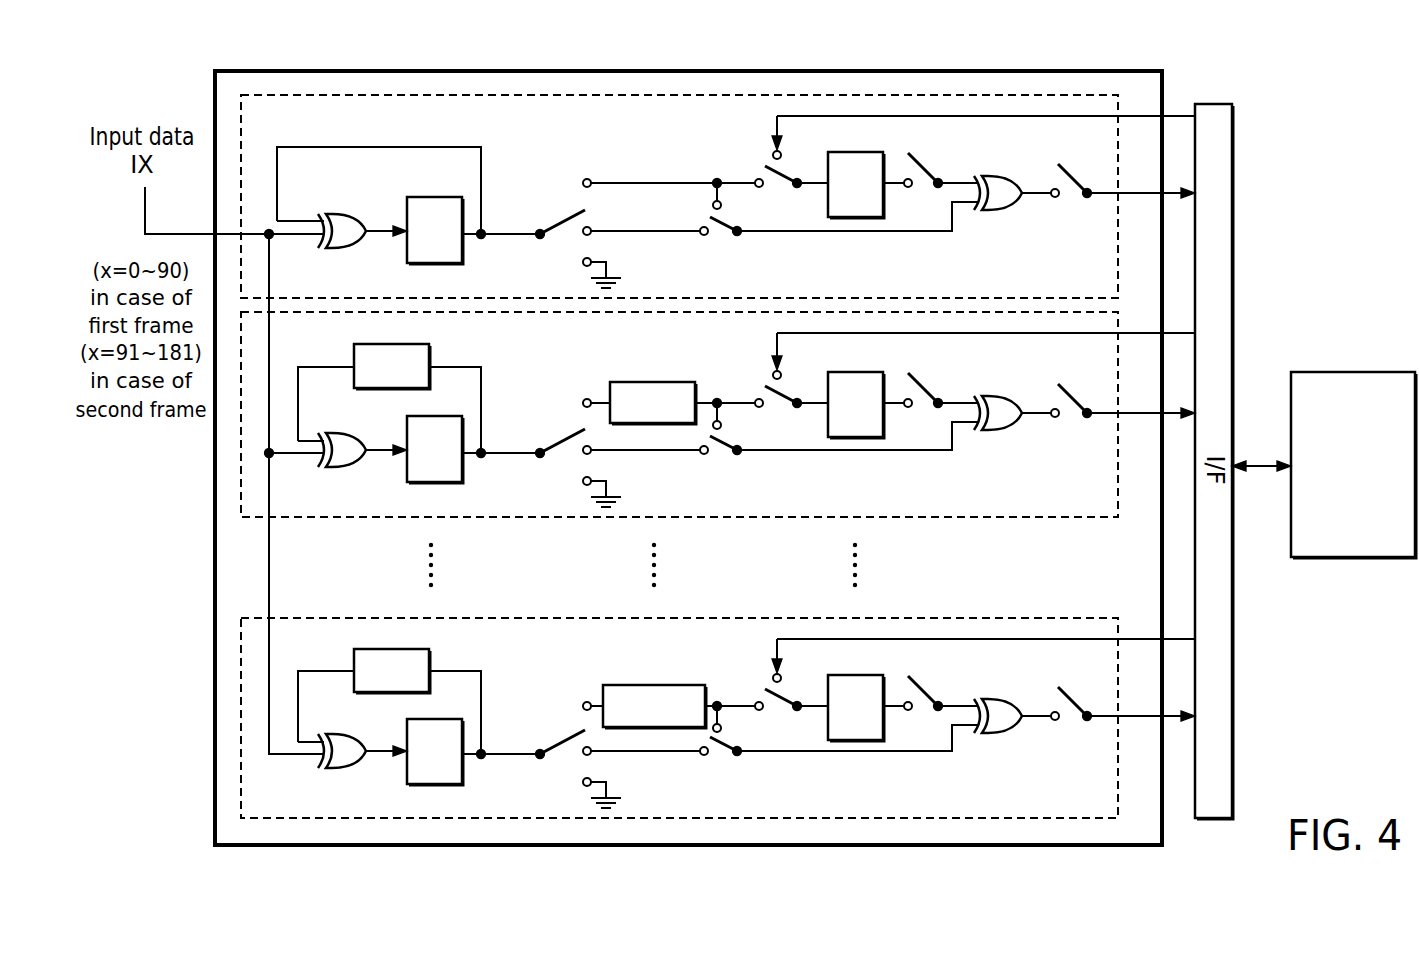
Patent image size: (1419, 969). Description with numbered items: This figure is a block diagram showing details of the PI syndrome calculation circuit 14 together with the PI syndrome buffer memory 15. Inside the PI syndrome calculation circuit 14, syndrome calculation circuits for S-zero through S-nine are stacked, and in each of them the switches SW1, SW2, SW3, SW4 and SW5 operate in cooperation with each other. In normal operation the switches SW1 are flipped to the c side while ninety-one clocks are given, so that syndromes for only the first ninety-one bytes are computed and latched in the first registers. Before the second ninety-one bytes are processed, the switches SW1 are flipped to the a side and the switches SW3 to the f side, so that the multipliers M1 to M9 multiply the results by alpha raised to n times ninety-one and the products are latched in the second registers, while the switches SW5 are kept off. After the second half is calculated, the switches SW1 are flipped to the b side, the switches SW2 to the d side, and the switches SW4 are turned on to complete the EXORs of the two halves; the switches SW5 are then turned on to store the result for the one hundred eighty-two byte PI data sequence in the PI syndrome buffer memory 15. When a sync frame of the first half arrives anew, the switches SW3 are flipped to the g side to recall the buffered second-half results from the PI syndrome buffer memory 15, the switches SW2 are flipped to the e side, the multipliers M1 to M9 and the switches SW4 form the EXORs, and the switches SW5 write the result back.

The PI syndrome calculation circuit 14 is at (641, 71).
The PI syndrome buffer memory 15 is at (1352, 372).
The switch SW1 is at (558, 215).
The switch SW2 is at (728, 238).
The switch SW3 is at (769, 152).
The switch SW4 is at (930, 172).
The switch SW5 is at (1074, 172).
The multiplier M1 is at (656, 382).
The multiplier M9 is at (656, 685).